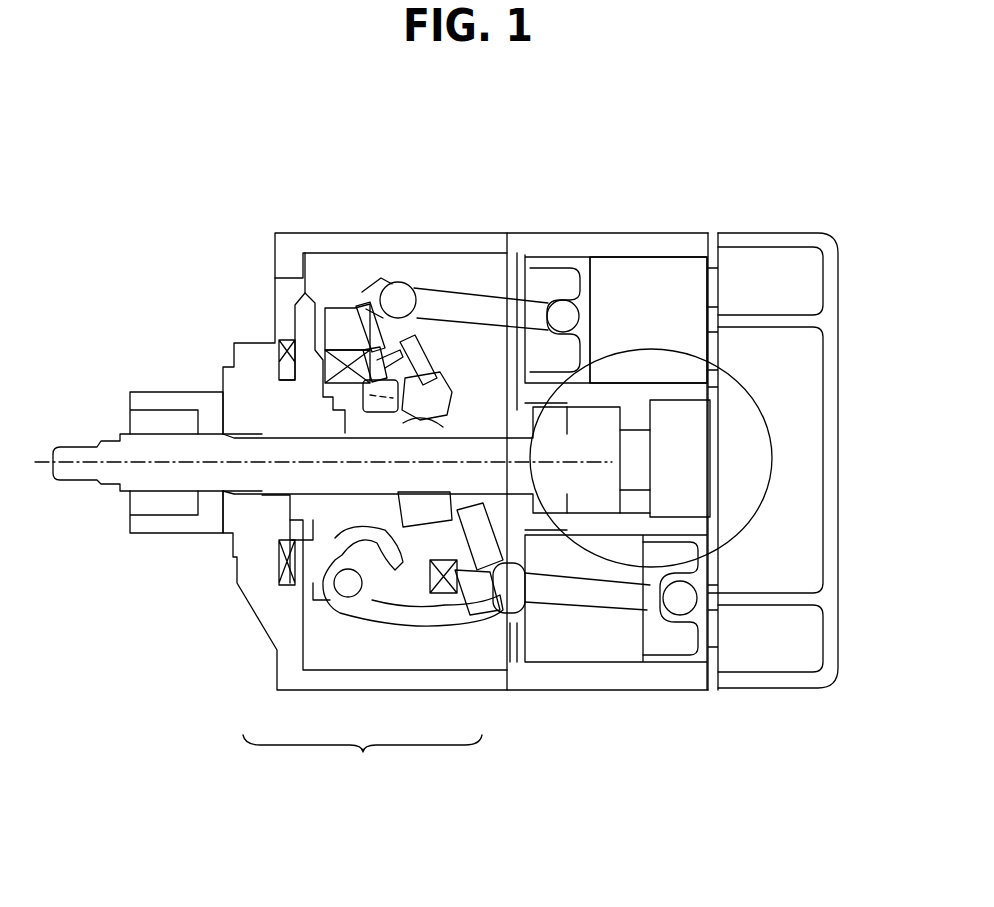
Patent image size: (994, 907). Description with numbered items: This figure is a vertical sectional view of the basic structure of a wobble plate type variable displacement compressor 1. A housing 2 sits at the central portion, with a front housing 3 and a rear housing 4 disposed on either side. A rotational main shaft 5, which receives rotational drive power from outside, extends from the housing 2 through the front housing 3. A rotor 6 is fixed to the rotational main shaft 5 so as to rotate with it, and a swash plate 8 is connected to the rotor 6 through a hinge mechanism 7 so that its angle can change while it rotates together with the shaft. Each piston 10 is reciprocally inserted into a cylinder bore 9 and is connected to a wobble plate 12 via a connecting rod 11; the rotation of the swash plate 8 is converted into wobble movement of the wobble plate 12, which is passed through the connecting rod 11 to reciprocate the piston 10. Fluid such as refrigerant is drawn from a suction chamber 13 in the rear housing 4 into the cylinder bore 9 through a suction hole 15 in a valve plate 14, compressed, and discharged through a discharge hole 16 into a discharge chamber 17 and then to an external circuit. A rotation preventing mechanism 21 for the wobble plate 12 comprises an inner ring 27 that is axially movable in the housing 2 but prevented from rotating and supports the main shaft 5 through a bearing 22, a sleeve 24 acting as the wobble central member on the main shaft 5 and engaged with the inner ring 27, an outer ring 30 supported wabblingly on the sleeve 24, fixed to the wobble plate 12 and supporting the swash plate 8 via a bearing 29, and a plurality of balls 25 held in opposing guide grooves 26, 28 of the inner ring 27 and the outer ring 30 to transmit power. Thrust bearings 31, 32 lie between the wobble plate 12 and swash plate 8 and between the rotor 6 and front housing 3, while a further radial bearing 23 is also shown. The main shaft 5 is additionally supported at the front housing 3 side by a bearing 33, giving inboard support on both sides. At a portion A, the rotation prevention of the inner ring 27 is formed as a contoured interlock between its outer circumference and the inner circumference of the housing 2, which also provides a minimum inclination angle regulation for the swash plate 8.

The wobble plate type variable displacement compressor 1 is at (706, 196).
The housing 2 is at (660, 245).
The front housing 3 is at (163, 405).
The rear housing 4 is at (773, 240).
The rotational main shaft 5 is at (260, 472).
The rotor 6 is at (313, 518).
The hinge mechanism 7 is at (342, 610).
The swash plate 8 is at (342, 337).
The cylinder bore 9 is at (603, 255).
The piston 10 is at (583, 307).
The connecting rod 11 is at (400, 302).
The wobble plate 12 is at (520, 620).
The suction chamber 13 is at (800, 642).
The valve plate 14 is at (714, 605).
The suction hole 15 is at (712, 640).
The discharge hole 16 is at (720, 567).
The discharge chamber 17 is at (800, 420).
The rotation preventing mechanism of wobble plate 21 is at (362, 758).
The bearing 22 is at (540, 490).
The bearing 23 is at (443, 407).
The sleeve 24 is at (415, 498).
The ball 25 is at (398, 408).
The guide groove of inner ring 26 is at (427, 377).
The inner ring 27 is at (447, 470).
The guide groove of outer ring 28 is at (372, 402).
The bearing 29 is at (345, 367).
The outer ring 30 is at (442, 517).
The thrust bearing 31 is at (356, 311).
The thrust bearing 32 is at (283, 367).
The bearing 33 is at (262, 430).
The portion A is at (750, 387).